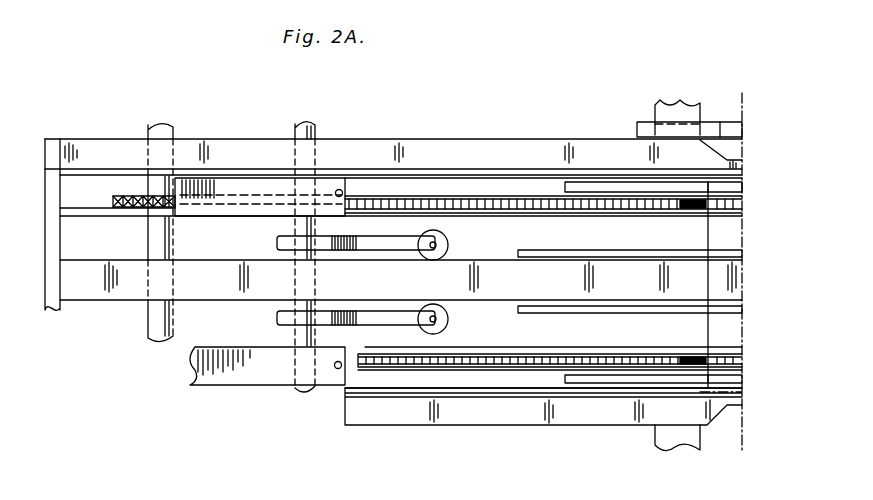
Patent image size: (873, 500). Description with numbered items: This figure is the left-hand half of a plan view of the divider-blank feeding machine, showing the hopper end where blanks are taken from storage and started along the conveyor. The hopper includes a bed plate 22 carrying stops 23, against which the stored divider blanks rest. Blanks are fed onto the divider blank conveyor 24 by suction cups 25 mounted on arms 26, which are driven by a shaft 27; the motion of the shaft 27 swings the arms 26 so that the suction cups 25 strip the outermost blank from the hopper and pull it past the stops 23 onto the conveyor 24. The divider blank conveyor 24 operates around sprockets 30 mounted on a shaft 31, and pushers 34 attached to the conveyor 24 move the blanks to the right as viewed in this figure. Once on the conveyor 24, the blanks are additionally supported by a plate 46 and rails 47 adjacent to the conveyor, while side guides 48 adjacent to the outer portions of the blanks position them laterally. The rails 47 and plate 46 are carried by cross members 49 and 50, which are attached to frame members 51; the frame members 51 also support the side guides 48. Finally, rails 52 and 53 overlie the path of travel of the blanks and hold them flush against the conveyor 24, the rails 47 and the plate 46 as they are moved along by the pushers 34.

The bed plate 22 is at (247, 186).
The stops 23 is at (340, 190).
The divider blank conveyor 24 is at (117, 200).
The suction cups 25 is at (440, 246).
The arms 26 is at (390, 262).
The shaft 27 is at (300, 392).
The sprockets 30 is at (130, 190).
The shaft 31 is at (172, 127).
The pushers 34 is at (695, 211).
The plate 46 is at (401, 280).
The rails 47 is at (565, 214).
The side guides 48 is at (455, 174).
The cross member 49 is at (58, 310).
The cross member 50 is at (686, 103).
The frame members 51 is at (87, 147).
The rails 52 is at (742, 256).
The rails 53 is at (740, 187).